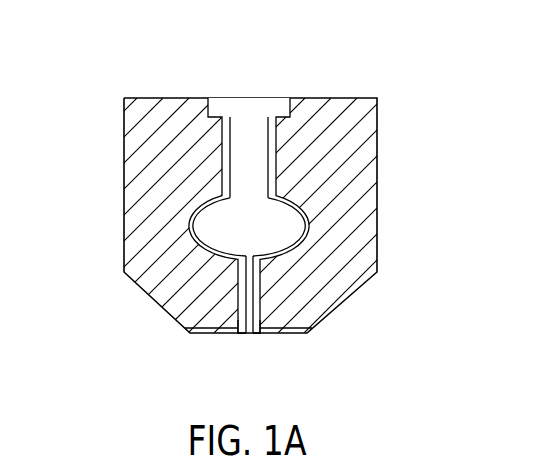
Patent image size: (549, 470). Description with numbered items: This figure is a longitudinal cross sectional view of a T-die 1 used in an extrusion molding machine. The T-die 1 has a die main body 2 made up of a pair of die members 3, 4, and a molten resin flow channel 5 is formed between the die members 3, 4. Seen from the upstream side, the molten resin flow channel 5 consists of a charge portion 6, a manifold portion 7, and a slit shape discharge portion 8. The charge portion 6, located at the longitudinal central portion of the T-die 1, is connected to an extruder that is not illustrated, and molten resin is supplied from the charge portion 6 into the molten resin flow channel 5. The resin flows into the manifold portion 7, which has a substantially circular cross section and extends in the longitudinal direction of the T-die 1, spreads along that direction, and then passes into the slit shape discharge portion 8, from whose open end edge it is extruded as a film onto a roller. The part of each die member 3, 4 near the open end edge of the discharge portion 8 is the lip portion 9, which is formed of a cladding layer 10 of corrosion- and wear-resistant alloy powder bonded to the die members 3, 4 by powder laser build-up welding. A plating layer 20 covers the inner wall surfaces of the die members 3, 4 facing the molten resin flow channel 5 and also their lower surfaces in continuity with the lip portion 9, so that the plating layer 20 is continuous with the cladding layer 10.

The T-die 1 is at (373, 82).
The die main body 2 is at (274, 166).
The die member 3 is at (173, 108).
The die member 4 is at (200, 43).
The molten resin flow channel 5 is at (233, 249).
The charge portion 6 is at (247, 146).
The manifold portion 7 is at (248, 222).
The slit shape discharge portion 8 is at (236, 281).
The lip portion 9 is at (238, 340).
The cladding layer 10 is at (255, 340).
The plating layer 20 is at (275, 192).